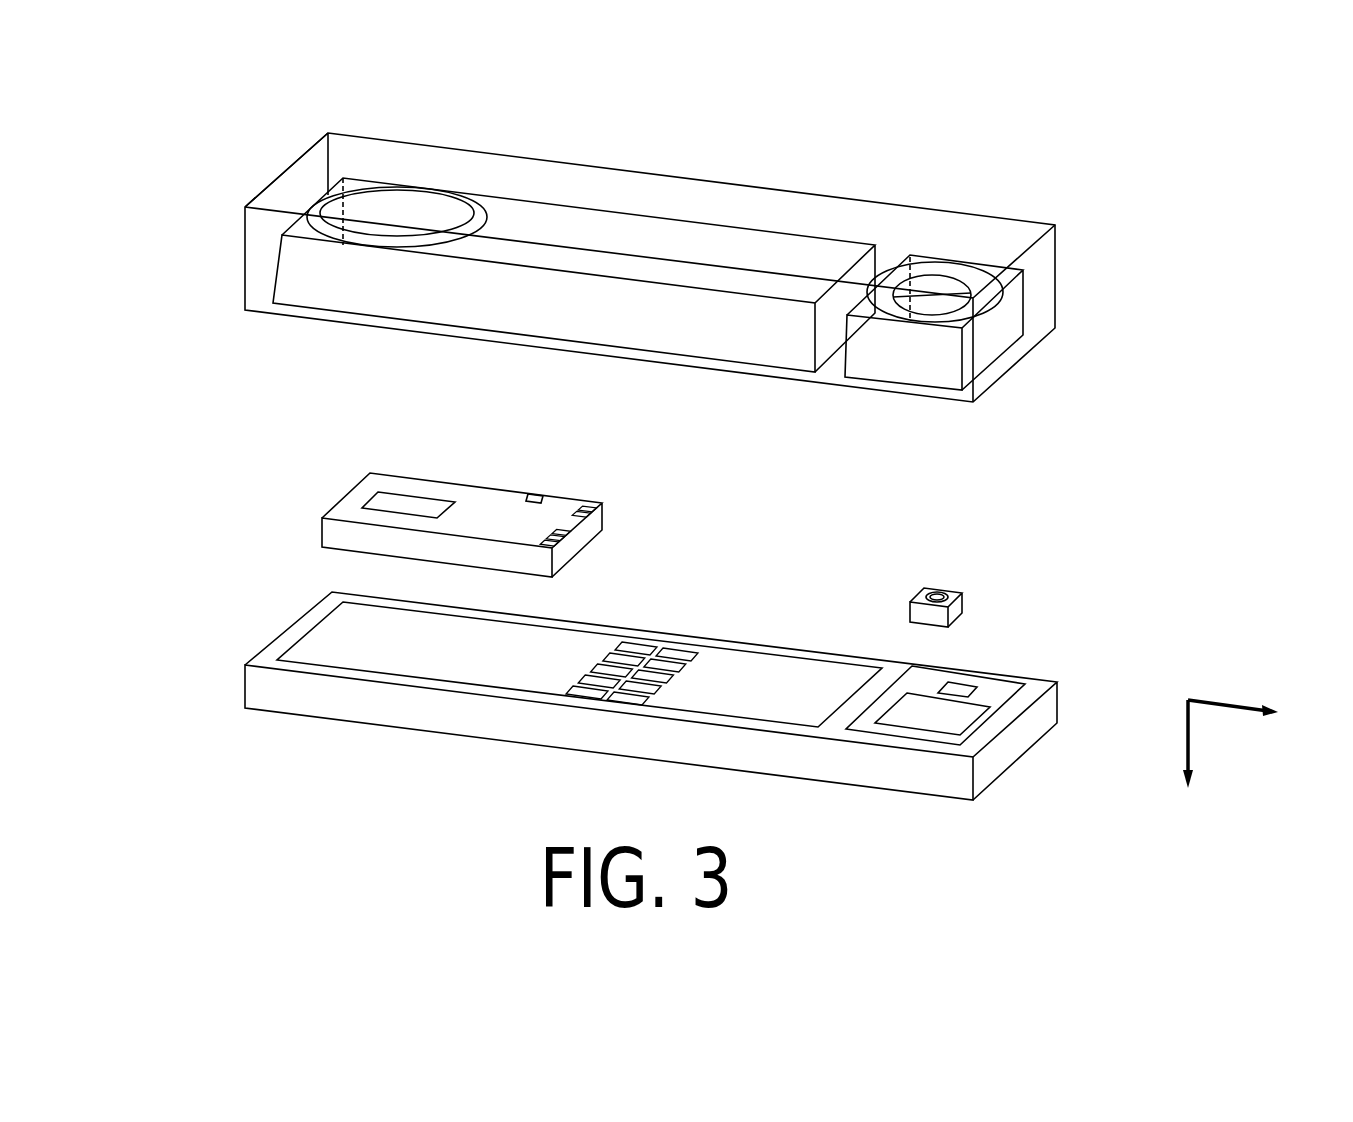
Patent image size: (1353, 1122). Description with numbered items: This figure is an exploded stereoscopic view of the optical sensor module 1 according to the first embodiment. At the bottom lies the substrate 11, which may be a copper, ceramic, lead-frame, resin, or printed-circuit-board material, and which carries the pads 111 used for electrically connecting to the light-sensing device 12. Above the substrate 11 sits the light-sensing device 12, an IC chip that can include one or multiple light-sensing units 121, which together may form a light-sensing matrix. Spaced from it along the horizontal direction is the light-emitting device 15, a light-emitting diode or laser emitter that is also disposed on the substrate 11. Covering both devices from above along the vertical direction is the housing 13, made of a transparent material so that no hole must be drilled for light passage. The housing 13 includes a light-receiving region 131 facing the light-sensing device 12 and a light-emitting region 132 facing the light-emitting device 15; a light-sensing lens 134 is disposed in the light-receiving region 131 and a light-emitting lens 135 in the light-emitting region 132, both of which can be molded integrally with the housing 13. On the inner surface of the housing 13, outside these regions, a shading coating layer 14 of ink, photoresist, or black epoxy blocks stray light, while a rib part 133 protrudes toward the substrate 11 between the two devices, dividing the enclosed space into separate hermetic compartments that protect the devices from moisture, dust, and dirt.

The optical sensor module 1 is at (1182, 437).
The substrate 11 is at (372, 715).
The pads 111 is at (642, 645).
The light-sensing device 12 is at (350, 497).
The light-sensing unit 121 is at (418, 502).
The housing 13 is at (286, 178).
The light-receiving region 131 is at (413, 198).
The light-emitting region 132 is at (947, 272).
The rib part 133 is at (835, 365).
The light-sensing lens 134 is at (353, 233).
The light-emitting lens 135 is at (943, 312).
The shading coating layer 14 is at (722, 347).
The light-emitting device 15 is at (960, 605).